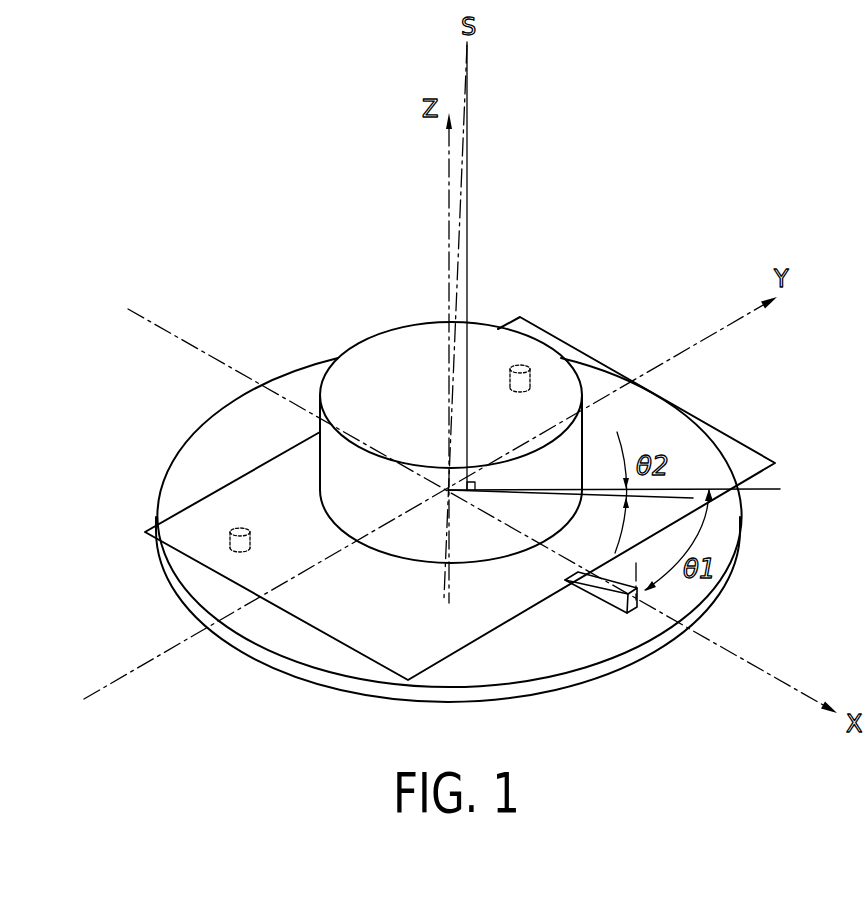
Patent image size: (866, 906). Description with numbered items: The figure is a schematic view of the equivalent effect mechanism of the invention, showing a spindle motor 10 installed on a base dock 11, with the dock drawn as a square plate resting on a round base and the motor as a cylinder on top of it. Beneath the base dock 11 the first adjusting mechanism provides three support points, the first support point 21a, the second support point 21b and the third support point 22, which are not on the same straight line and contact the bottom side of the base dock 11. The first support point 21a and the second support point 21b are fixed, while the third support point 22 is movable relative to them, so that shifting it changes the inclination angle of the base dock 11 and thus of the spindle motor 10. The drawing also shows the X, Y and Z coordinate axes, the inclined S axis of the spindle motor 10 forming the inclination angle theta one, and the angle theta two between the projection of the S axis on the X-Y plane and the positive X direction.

The spindle motor 10 is at (514, 350).
The base dock 11 is at (725, 460).
The first support point 21a is at (528, 367).
The second support point 21b is at (230, 533).
The third support point 22 is at (618, 612).